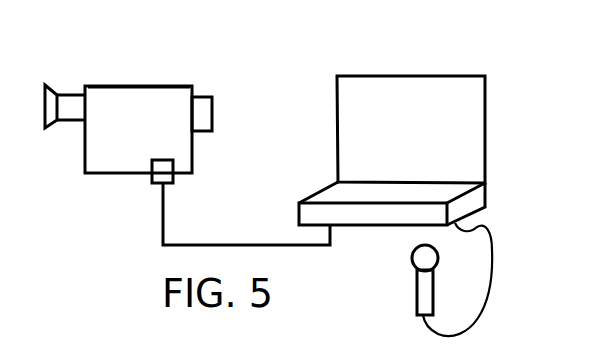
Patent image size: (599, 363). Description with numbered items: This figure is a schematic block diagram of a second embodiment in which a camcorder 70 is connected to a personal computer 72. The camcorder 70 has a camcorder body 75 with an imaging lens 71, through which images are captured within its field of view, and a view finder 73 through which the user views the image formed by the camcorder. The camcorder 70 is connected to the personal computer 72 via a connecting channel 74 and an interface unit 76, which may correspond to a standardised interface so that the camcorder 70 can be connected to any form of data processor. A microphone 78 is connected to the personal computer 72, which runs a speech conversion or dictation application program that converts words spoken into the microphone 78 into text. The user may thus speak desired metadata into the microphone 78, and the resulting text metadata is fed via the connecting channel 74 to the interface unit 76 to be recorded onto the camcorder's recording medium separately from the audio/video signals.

The camcorder 70 is at (114, 70).
The imaging lens 71 is at (213, 110).
The personal computer 72 is at (477, 103).
The view finder 73 is at (67, 118).
The connecting channel 74 is at (263, 243).
The camcorder body 75 is at (167, 86).
The interface unit 76 is at (175, 180).
The microphone 78 is at (415, 292).